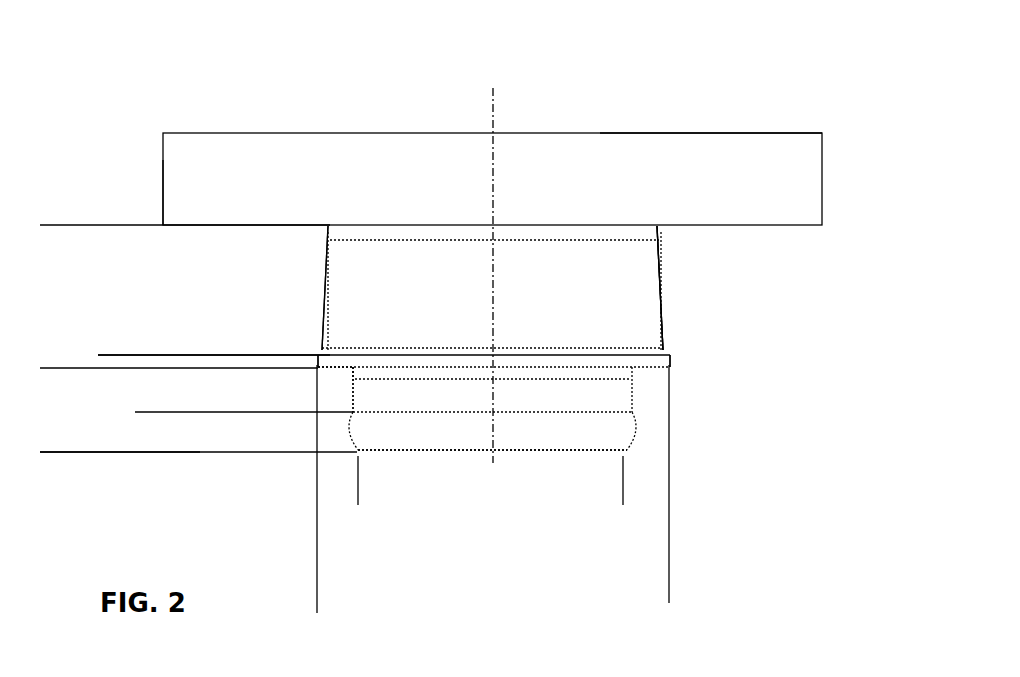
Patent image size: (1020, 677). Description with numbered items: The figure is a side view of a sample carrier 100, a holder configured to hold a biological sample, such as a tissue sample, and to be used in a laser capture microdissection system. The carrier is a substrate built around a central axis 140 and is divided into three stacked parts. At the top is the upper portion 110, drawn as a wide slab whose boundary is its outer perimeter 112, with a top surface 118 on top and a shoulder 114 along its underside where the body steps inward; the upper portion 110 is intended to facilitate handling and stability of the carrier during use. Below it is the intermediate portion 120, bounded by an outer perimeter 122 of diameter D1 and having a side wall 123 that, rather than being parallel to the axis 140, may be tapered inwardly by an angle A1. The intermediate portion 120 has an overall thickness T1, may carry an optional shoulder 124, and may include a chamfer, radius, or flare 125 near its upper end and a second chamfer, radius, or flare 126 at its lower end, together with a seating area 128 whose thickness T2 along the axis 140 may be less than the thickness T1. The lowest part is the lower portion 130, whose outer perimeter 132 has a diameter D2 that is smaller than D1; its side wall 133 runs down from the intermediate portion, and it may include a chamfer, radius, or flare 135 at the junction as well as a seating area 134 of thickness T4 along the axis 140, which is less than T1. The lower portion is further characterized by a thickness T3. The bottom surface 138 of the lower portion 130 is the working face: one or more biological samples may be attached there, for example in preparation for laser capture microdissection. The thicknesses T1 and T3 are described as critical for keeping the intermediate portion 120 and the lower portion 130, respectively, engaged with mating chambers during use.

The sample carrier 100 is at (149, 80).
The upper portion 110 is at (530, 165).
The outer perimeter 112 is at (160, 200).
The shoulder 114 is at (265, 228).
The top surface 118 is at (766, 132).
The intermediate portion 120 is at (542, 288).
The outer perimeter 122 is at (672, 365).
The side wall 123 is at (658, 282).
The shoulder 124 is at (328, 371).
The flare 125 is at (328, 233).
The flare 126 is at (319, 354).
The seating area 128 is at (670, 360).
The lower portion 130 is at (448, 397).
The outer perimeter 132 is at (630, 450).
The side wall 133 is at (355, 397).
The seating area 134 is at (638, 432).
The flare 135 is at (352, 370).
The bottom surface 138 is at (462, 452).
The axis 140 is at (492, 120).
The taper angle A1 is at (641, 288).
The intermediate portion diameter D1 is at (493, 489).
The lower portion diameter D2 is at (490, 480).
The intermediate portion thickness T1 is at (101, 296).
The seating area thickness T2 is at (214, 345).
The lower portion thickness T3 is at (62, 410).
The seating area thickness T4 is at (150, 487).